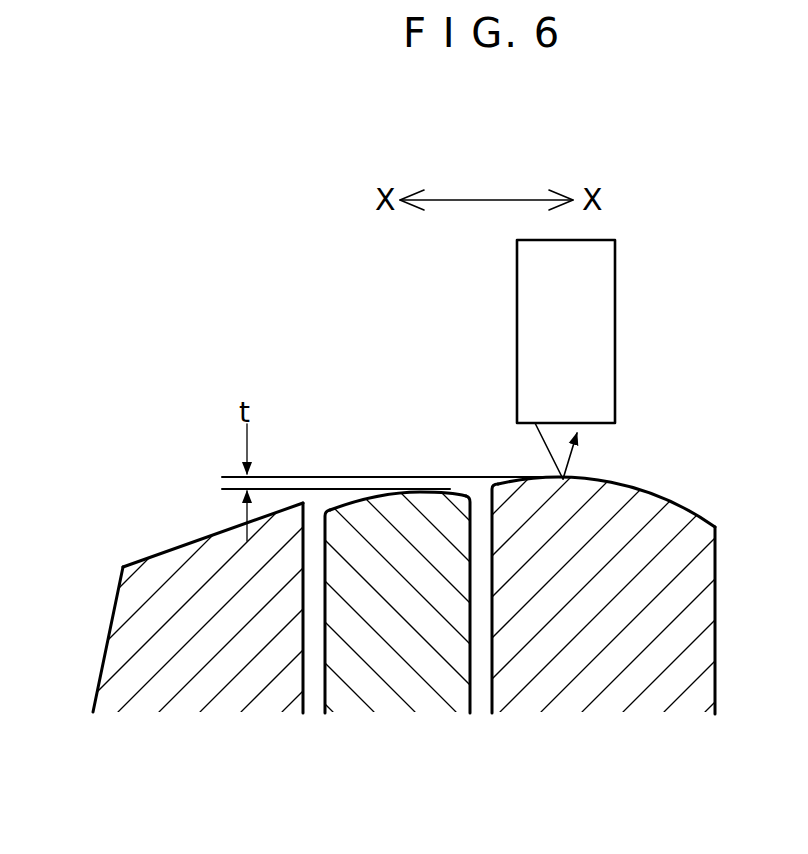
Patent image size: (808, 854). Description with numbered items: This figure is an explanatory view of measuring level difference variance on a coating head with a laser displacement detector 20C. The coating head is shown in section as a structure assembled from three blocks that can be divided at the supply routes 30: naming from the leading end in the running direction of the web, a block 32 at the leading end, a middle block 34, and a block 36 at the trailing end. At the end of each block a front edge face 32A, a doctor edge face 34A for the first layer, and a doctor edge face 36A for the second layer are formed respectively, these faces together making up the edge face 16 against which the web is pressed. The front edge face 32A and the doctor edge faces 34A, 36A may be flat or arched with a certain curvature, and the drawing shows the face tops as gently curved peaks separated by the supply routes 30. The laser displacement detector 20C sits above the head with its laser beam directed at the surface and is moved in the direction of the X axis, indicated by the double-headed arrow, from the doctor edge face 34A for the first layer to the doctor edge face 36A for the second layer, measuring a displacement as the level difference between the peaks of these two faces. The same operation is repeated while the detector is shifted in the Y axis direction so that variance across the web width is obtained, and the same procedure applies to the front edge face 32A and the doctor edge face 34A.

The edge face 16 is at (405, 466).
The laser displacement detector 20C is at (607, 299).
The supply routes 30 is at (315, 688).
The block at the leading end 32 is at (203, 687).
The front edge face 32A is at (170, 549).
The middle block 34 is at (397, 685).
The doctor edge face for a first layer 34A is at (438, 490).
The block at the trailing end 36 is at (600, 678).
The doctor edge face for a second layer 36A is at (677, 507).